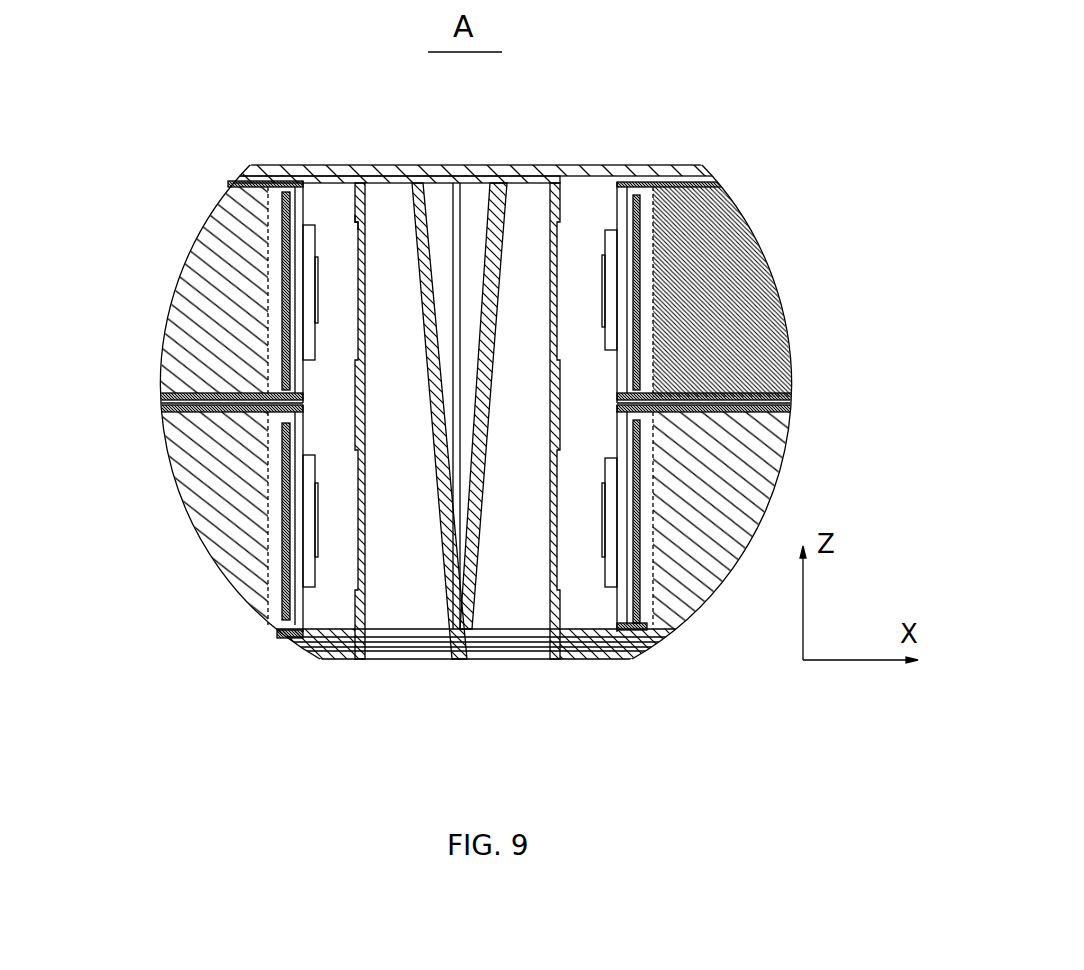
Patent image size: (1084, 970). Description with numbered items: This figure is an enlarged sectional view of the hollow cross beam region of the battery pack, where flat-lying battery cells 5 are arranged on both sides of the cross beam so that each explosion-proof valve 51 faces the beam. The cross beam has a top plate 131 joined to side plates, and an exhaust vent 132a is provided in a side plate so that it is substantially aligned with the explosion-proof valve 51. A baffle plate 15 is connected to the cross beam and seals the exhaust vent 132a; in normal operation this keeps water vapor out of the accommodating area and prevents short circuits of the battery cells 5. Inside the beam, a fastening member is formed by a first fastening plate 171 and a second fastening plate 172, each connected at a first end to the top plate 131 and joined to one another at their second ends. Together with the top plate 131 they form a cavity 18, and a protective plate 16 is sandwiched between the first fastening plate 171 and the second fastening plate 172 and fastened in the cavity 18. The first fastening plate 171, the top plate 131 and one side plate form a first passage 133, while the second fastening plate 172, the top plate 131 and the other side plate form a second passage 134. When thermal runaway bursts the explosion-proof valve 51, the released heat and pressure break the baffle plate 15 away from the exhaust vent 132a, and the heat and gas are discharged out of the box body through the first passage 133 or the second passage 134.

The battery cell 5 is at (228, 228).
The explosion-proof valve 51 is at (302, 238).
The top plate 131 is at (405, 178).
The exhaust vent 132a is at (355, 225).
The first passage 133 is at (404, 585).
The second passage 134 is at (513, 585).
The baffle plate 15 is at (557, 280).
The protective plate 16 is at (462, 405).
The first fastening plate 171 is at (420, 290).
The second fastening plate 172 is at (500, 290).
The cavity 18 is at (472, 213).